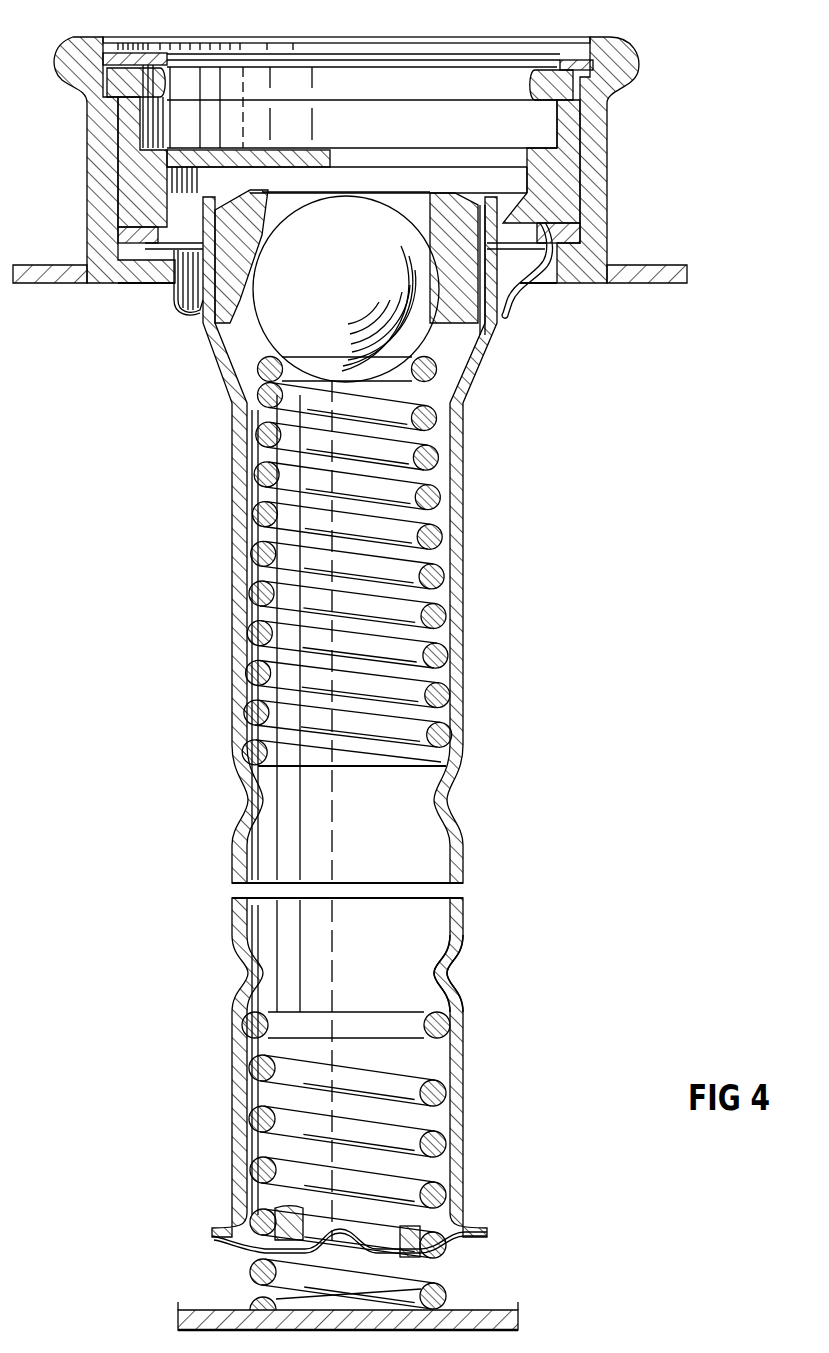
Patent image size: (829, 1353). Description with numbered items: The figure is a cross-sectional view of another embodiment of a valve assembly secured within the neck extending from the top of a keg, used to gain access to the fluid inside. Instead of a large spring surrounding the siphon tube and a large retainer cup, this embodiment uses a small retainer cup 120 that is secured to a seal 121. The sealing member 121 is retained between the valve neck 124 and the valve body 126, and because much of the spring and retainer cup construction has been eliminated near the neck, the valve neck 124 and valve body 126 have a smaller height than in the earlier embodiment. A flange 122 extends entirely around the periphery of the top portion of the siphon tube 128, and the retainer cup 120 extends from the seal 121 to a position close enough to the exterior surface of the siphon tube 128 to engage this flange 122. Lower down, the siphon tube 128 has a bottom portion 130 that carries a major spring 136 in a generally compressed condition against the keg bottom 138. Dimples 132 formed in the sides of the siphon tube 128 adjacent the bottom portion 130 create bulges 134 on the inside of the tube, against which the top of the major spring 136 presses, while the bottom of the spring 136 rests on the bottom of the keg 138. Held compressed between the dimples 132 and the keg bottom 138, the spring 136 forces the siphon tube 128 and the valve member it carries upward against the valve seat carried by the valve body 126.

The retainer cup 120 is at (513, 314).
The seal 121 is at (582, 242).
The flange 122 is at (180, 292).
The valve neck 124 is at (616, 177).
The valve body 126 is at (552, 182).
The siphon tube 128 is at (473, 831).
The bottom portion 130 is at (463, 1050).
The dimples 132 is at (453, 984).
The bulges 134 is at (438, 948).
The major spring 136 is at (441, 1098).
The keg bottom 138 is at (485, 1310).